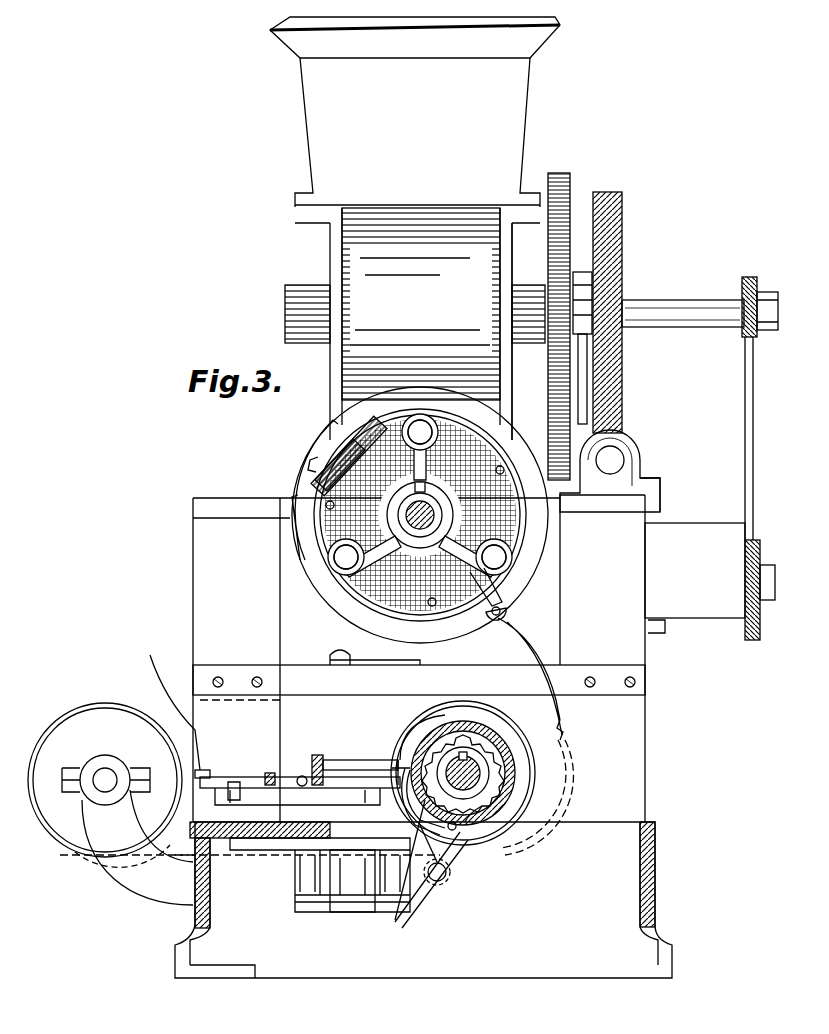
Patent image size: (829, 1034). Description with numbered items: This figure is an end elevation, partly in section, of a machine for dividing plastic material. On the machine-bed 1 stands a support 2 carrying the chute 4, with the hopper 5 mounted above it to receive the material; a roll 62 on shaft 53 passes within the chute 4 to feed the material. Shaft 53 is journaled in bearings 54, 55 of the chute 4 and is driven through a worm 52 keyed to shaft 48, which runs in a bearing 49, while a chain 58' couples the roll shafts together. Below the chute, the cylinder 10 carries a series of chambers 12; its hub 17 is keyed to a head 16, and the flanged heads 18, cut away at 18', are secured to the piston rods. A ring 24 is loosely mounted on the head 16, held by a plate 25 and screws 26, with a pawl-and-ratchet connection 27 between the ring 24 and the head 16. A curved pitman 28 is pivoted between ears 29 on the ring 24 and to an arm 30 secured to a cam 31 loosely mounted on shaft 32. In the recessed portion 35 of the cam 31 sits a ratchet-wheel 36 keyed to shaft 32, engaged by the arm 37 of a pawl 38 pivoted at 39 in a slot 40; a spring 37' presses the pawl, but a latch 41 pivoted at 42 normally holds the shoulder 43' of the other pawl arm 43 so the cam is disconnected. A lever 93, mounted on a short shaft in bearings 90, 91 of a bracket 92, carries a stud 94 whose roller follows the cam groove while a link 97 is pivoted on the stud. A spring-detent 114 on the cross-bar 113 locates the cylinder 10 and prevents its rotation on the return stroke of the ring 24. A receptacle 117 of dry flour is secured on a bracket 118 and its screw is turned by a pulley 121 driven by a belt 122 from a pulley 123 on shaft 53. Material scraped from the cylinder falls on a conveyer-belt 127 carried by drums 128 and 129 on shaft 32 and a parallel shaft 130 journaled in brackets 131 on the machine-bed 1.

The machine-bed 1 is at (423, 900).
The support 2 is at (419, 658).
The chute 4 is at (505, 400).
The hopper 5 is at (415, 112).
The cylinder 10 is at (298, 480).
The chambers 12 is at (432, 425).
The head 16 is at (442, 500).
The hub 17 is at (420, 530).
The flanged heads 18 is at (407, 511).
The cut-away portion of flanged head 18' is at (434, 450).
The ring 24 is at (385, 432).
The plate 25 is at (318, 512).
The screws 26 is at (330, 509).
The pawl-and-ratchet connection 27 is at (335, 462).
The curved pitman 28 is at (560, 700).
The ears 29 is at (488, 594).
The arm 30 is at (447, 872).
The cam 31 is at (510, 745).
The shaft 32 is at (478, 778).
The recessed portion 35 is at (440, 748).
The ratchet-wheel 36 is at (463, 774).
The arm of pawl 37 is at (456, 822).
The spring 37' is at (543, 831).
The pawl 38 is at (420, 870).
The pivot 39 is at (455, 850).
The slot 40 is at (525, 795).
The latch 41 is at (250, 775).
The pivot 42 is at (200, 770).
The arm of pawl 43 is at (356, 906).
The shoulder 43' is at (389, 758).
The shaft 48 is at (612, 462).
The bearing 49 is at (655, 490).
The worm 52 is at (620, 192).
The shaft 53 is at (665, 310).
The bearing 54 is at (558, 173).
The bearing 55 is at (312, 318).
The chain 58' is at (619, 348).
The roll 62 is at (421, 304).
The bearing 90 is at (305, 912).
The bearing 91 is at (398, 915).
The bracket 92 is at (285, 847).
The lever 93 is at (352, 881).
The stud 94 is at (316, 755).
The link 97 is at (328, 762).
The cross-bar 113 is at (419, 680).
The spring-detent 114 is at (400, 650).
The receptacle 117 is at (695, 570).
The bracket 118 is at (660, 630).
The pulley 121 is at (760, 560).
The belt 122 is at (745, 376).
The pulley 123 is at (746, 290).
The conveyer-belt 127 is at (160, 699).
The drum 128 is at (500, 832).
The drum 129 is at (108, 712).
The shaft 130 is at (105, 782).
The brackets 131 is at (127, 847).